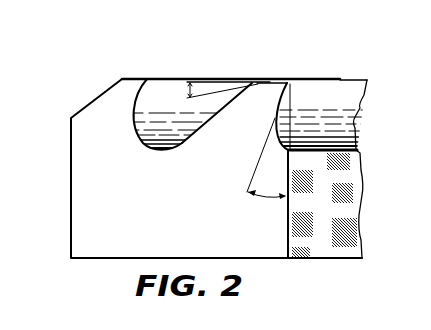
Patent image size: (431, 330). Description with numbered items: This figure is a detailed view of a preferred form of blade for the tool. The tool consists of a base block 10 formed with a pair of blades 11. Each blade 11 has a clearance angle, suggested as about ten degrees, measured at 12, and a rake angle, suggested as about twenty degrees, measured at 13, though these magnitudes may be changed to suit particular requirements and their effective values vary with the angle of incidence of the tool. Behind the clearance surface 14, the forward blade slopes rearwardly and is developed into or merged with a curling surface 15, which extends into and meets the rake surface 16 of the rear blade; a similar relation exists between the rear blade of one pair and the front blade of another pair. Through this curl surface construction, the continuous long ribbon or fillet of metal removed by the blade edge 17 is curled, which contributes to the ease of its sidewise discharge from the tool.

The base block 10 is at (95, 238).
The blade 11 is at (199, 96).
The clearance angle 12 is at (222, 90).
The rake angle 13 is at (266, 199).
The clearance surface 14 is at (124, 79).
The curling surface 15 is at (147, 152).
The rake surface 16 is at (137, 103).
The blade edge 17 is at (187, 78).